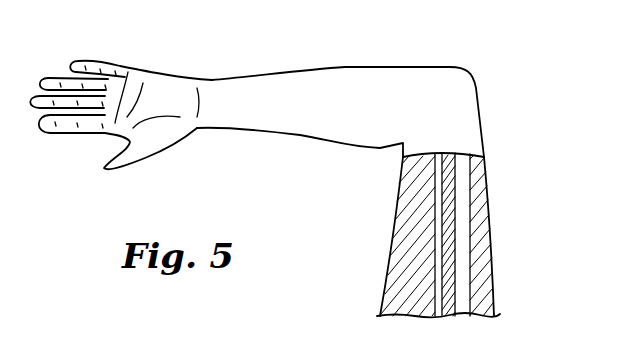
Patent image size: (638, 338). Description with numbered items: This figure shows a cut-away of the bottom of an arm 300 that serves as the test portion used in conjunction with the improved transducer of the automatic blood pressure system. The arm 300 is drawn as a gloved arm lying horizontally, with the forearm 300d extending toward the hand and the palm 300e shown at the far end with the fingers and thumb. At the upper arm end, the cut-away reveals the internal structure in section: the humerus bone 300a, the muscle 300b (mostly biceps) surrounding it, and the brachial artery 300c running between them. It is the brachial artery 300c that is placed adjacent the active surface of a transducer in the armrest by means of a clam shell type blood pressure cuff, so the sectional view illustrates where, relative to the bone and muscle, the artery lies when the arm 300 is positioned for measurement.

The arm 300 is at (486, 84).
The humerus bone 300a is at (466, 229).
The muscle 300b is at (416, 212).
The brachial artery 300c is at (445, 287).
The forearm 300d is at (314, 72).
The palm 300e is at (125, 72).